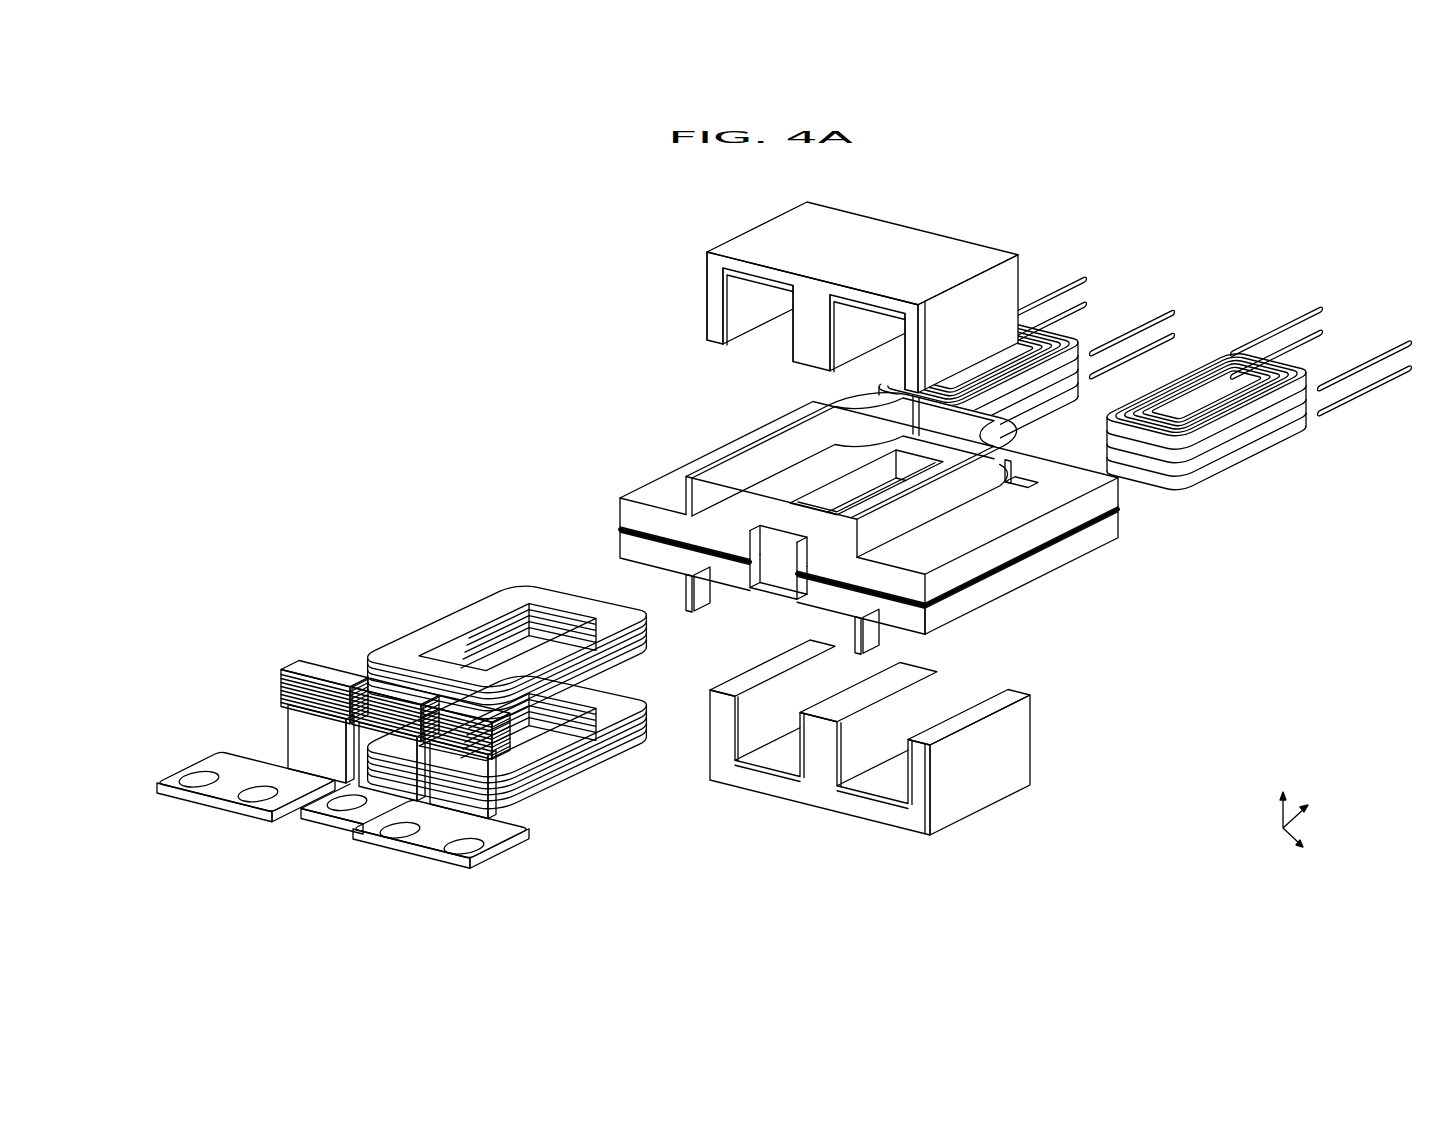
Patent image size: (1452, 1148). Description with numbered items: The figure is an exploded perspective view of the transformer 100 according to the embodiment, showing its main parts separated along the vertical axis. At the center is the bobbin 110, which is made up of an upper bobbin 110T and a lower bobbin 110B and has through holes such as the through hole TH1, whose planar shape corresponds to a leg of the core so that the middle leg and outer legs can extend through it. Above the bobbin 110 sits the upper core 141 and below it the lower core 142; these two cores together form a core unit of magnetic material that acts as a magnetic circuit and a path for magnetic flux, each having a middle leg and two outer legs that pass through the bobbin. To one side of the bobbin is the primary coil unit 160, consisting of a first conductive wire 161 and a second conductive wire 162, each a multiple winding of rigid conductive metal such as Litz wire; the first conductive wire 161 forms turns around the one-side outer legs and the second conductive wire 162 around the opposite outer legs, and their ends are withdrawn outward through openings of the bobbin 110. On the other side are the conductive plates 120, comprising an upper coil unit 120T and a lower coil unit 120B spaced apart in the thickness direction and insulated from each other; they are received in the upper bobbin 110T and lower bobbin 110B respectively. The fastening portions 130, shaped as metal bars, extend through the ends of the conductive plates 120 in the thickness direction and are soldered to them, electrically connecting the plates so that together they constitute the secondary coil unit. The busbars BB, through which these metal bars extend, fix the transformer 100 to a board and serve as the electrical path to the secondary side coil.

The transformer 100 is at (430, 340).
The bobbin 110 is at (535, 541).
The upper bobbin 110T is at (618, 511).
The lower bobbin 110B is at (618, 550).
The through hole TH1 is at (850, 490).
The conductive plates 120 is at (667, 822).
The upper coil unit 120T is at (567, 672).
The lower coil unit 120B is at (560, 790).
The fastening portions 130 is at (463, 762).
The busbars BB is at (228, 810).
The upper core 141 is at (696, 262).
The lower core 142 is at (1048, 728).
The primary coil unit 160 is at (1260, 240).
The first conductive wire 161 is at (1073, 333).
The second conductive wire 162 is at (1238, 355).